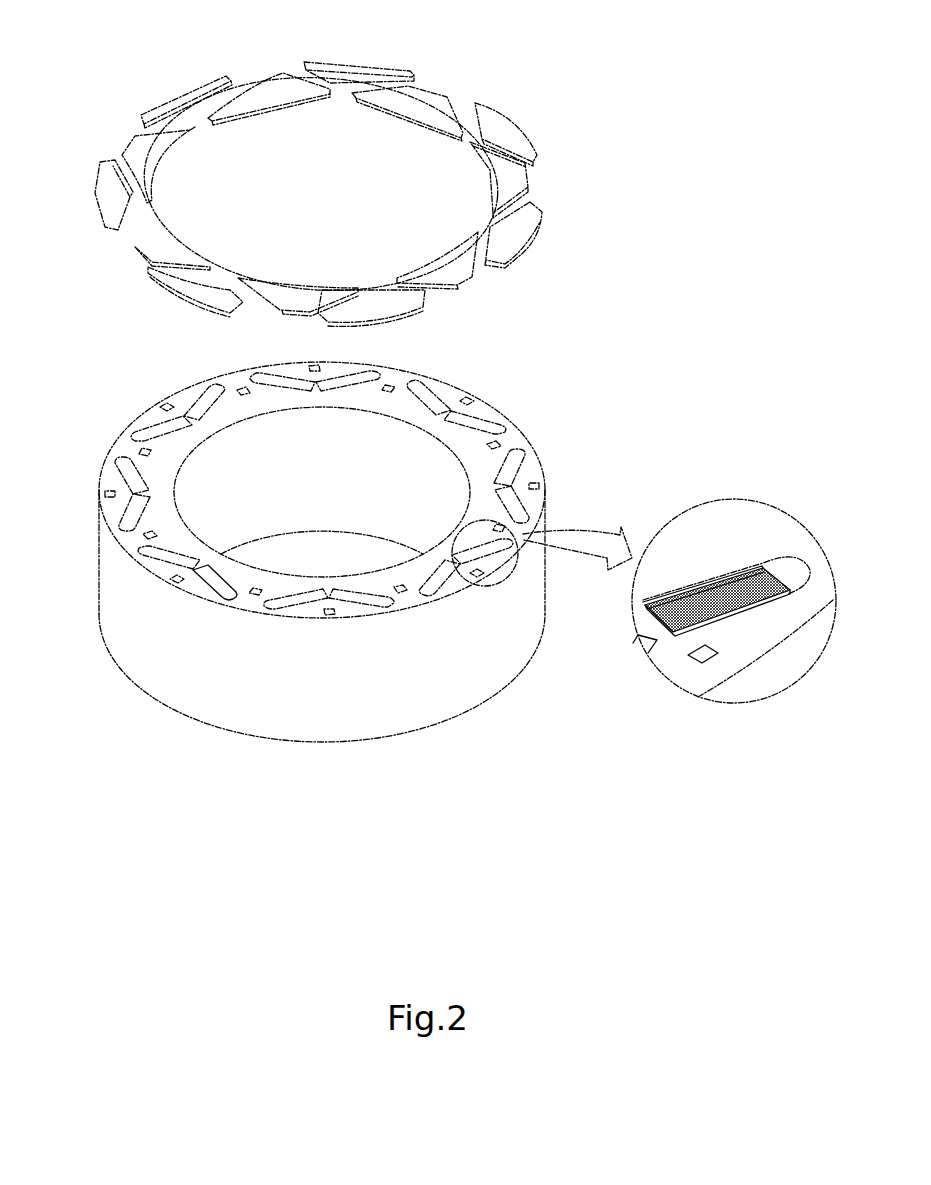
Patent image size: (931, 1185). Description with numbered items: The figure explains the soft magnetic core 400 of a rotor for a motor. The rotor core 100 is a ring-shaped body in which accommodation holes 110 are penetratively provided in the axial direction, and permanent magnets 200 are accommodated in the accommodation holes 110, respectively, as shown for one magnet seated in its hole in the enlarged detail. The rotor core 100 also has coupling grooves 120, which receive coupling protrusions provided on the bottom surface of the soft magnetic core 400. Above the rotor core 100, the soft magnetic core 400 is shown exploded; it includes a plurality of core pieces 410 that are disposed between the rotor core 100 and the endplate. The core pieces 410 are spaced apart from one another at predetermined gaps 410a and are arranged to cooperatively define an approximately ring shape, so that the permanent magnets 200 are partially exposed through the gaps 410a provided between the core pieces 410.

The rotor core 100 is at (247, 703).
The accommodation holes 110 is at (147, 562).
The coupling grooves 120 is at (401, 591).
The permanent magnets 200 is at (203, 578).
The soft magnetic core 400 is at (318, 163).
The core pieces 410 is at (248, 93).
The gaps 410a is at (323, 80).